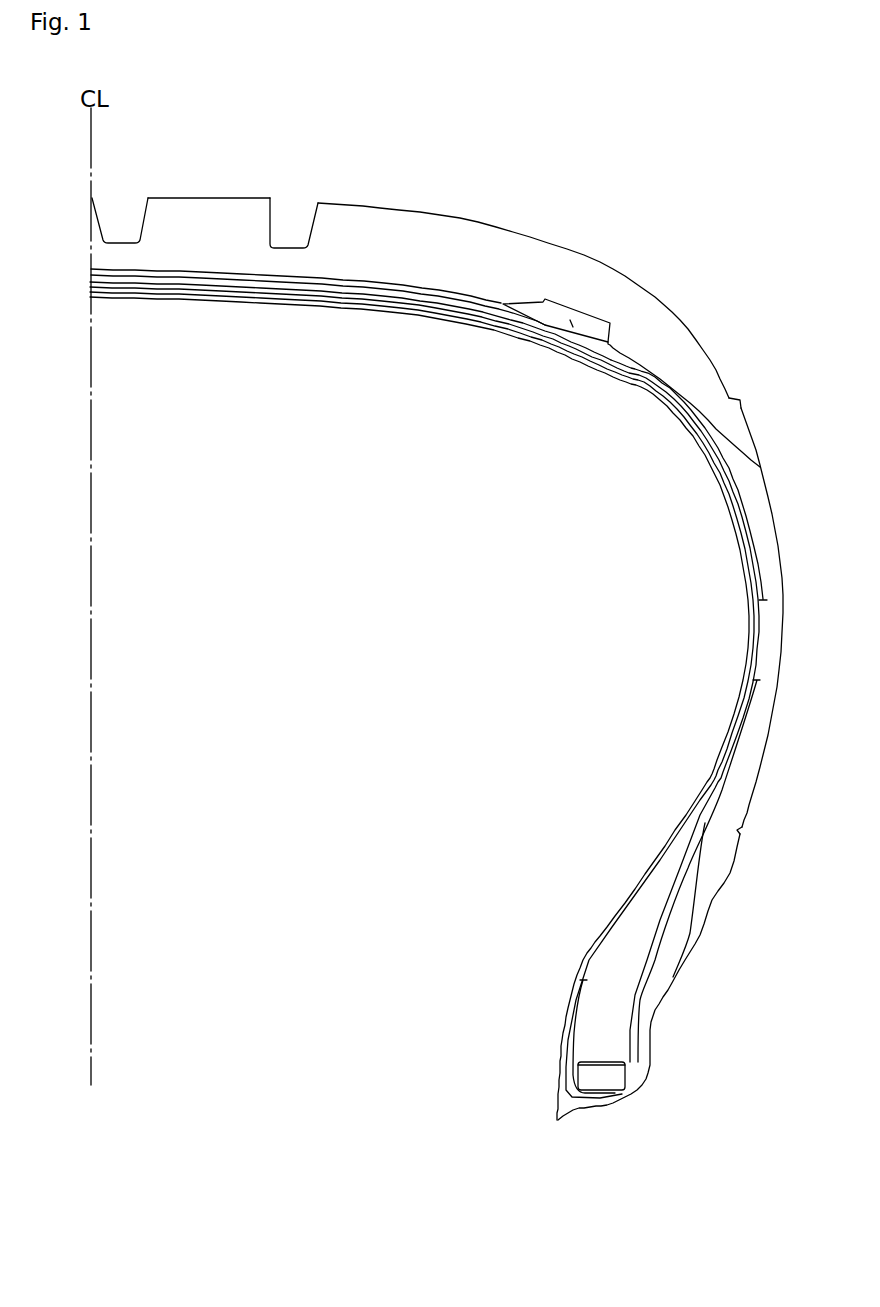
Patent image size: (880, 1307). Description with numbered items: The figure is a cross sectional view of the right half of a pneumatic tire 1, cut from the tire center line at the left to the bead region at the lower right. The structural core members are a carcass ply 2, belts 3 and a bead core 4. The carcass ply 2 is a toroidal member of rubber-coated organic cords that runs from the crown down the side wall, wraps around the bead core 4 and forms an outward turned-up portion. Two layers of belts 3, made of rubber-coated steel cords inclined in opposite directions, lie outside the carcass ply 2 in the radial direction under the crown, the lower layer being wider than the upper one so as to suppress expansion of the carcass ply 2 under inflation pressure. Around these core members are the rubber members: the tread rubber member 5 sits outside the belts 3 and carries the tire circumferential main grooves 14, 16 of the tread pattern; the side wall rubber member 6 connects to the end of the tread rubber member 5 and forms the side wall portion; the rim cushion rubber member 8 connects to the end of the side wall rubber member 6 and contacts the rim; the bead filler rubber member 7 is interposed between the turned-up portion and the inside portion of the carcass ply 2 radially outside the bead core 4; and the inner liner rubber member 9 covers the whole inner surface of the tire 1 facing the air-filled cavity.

The pneumatic tire 1 is at (620, 222).
The carcass ply 2 is at (688, 418).
The belts 3 is at (94, 287).
The bead core 4 is at (617, 1072).
The tread rubber member 5 is at (362, 218).
The side wall rubber member 6 is at (738, 457).
The bead filler rubber member 7 is at (650, 915).
The rim cushion rubber member 8 is at (662, 975).
The inner liner rubber member 9 is at (585, 360).
The tire circumferential main groove 14 is at (113, 212).
The tire circumferential main groove 16 is at (292, 212).